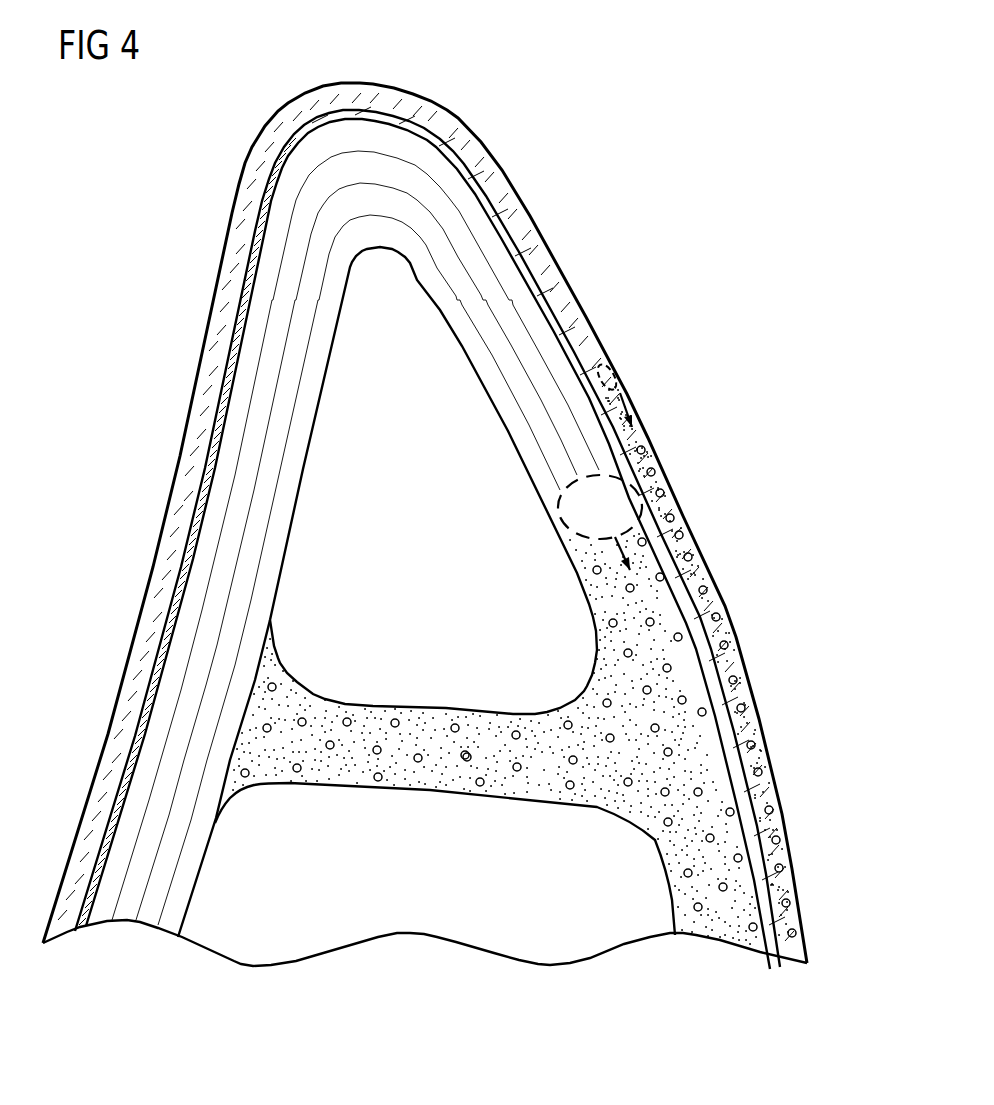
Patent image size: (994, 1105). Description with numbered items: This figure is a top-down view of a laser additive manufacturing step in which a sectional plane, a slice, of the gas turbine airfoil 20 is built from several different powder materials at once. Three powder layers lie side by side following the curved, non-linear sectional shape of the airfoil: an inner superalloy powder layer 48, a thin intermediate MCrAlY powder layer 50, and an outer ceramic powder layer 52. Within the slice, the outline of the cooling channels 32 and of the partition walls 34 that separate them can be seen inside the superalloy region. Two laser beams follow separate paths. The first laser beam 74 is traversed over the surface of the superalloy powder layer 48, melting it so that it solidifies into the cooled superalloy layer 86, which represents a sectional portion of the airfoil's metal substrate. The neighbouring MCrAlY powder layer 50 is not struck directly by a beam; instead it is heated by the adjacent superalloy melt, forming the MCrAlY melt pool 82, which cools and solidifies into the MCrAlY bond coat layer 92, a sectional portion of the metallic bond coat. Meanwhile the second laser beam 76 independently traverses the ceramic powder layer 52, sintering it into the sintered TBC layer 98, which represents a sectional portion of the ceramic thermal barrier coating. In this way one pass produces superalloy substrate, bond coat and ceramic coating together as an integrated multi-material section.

The gas turbine airfoil 20 is at (587, 93).
The cooling channels 32 is at (437, 546).
The partition walls 34 is at (425, 733).
The superalloy powder layer 48 is at (720, 915).
The MCrAlY powder layer 50 is at (773, 947).
The ceramic powder layer 52 is at (792, 947).
The first laser beam 74 is at (557, 498).
The second laser beam 76 is at (603, 388).
The MCrAlY melt pool 82 is at (625, 450).
The cooled superalloy layer 86 is at (290, 268).
The MCrAlY bond coat layer 92 is at (232, 340).
The sintered TBC layer 98 is at (203, 427).